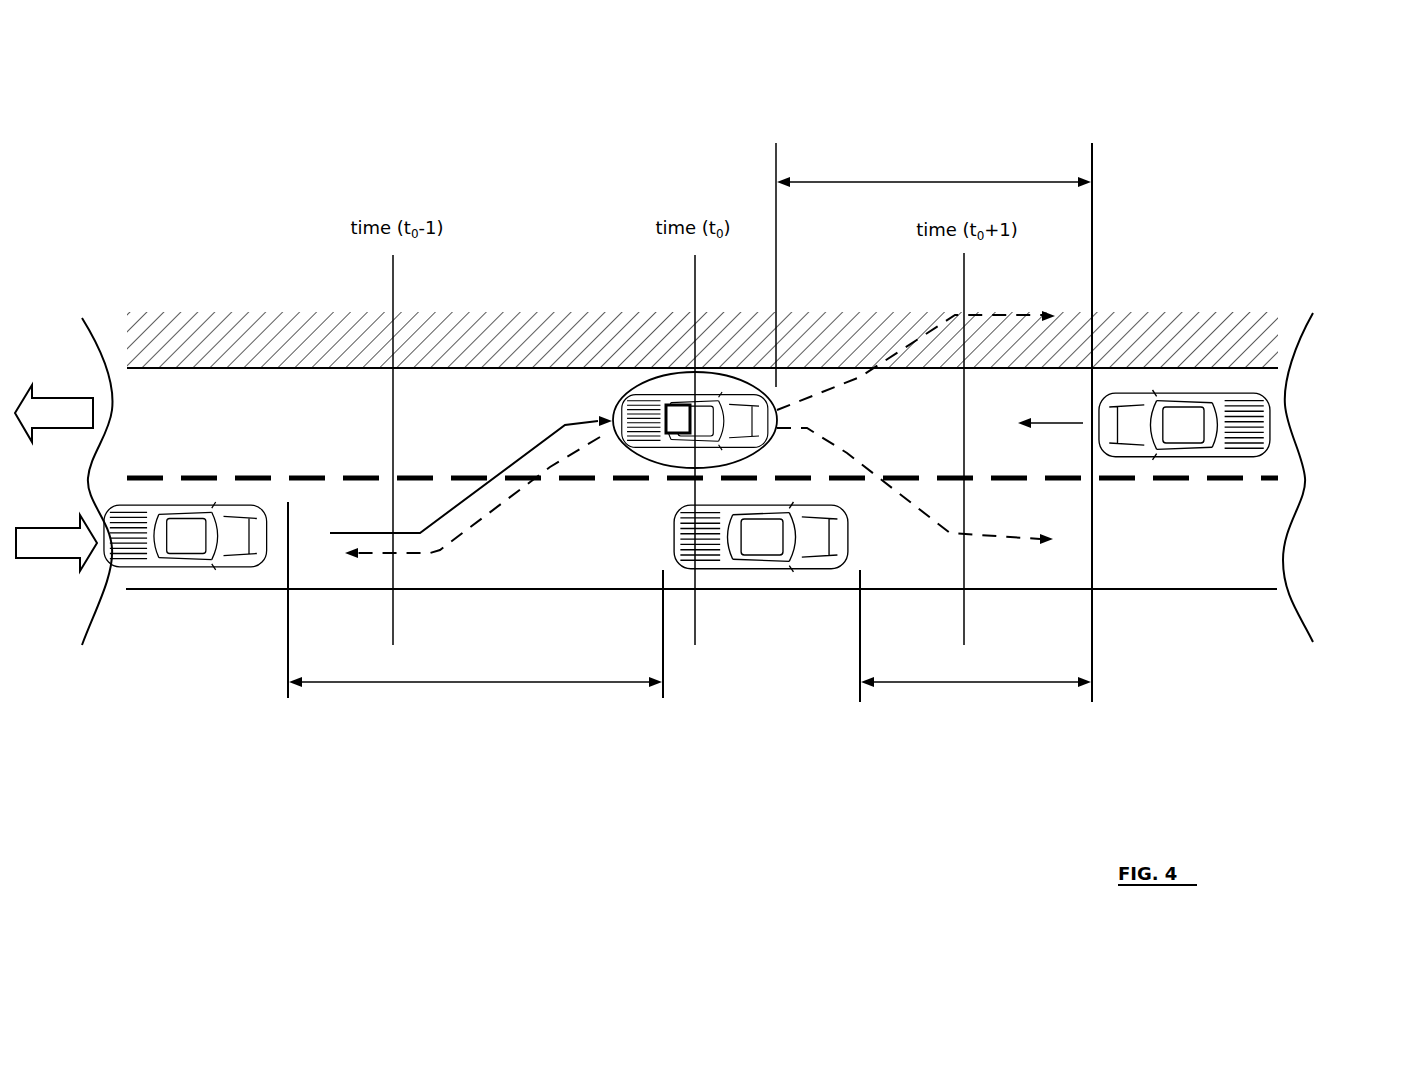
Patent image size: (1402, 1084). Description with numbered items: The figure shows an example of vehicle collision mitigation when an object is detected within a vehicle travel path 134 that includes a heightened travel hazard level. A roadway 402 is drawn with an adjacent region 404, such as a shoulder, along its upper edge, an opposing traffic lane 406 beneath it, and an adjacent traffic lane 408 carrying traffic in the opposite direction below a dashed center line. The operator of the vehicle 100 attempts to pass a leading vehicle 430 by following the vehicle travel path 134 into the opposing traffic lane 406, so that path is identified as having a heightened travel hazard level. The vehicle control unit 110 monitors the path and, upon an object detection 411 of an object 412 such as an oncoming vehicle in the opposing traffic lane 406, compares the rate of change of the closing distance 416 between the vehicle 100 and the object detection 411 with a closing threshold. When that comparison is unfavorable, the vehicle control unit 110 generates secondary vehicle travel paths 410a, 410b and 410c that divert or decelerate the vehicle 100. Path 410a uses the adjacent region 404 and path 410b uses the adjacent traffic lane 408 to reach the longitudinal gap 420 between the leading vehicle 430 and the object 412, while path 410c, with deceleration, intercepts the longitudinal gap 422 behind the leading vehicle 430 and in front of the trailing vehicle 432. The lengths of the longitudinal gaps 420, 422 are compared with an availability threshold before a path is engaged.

The vehicle 100 is at (610, 403).
The vehicle control unit 110 is at (692, 400).
The vehicle travel path 134 is at (577, 415).
The roadway 402 is at (603, 596).
The adjacent region 404 is at (287, 300).
The opposing traffic lane 406 is at (276, 436).
The adjacent traffic lane 408 is at (1219, 579).
The secondary vehicle travel path 410a is at (871, 384).
The secondary vehicle travel path 410b is at (855, 447).
The secondary vehicle travel path 410c is at (512, 512).
The object detection 411 is at (1105, 265).
The object 412 is at (1292, 408).
The closing distance 416 is at (933, 253).
The longitudinal gap 420 is at (975, 658).
The longitudinal gap 422 is at (475, 623).
The leading vehicle 430 is at (740, 592).
The vehicle 432 is at (178, 582).